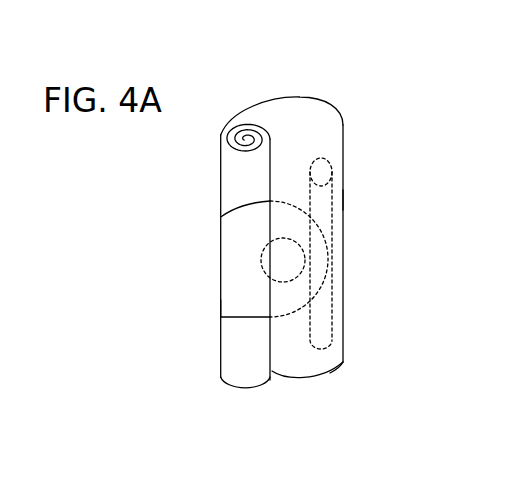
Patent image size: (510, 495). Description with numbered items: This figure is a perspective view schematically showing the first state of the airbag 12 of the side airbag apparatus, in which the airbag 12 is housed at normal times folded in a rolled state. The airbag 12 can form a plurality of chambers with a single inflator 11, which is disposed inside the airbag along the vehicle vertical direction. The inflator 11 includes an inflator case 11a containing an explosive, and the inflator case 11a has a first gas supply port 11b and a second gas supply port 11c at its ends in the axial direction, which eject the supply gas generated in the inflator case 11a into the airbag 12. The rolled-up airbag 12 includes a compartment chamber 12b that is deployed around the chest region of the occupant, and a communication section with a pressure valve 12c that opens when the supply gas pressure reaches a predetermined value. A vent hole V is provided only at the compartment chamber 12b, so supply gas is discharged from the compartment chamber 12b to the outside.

The airbag 12 is at (289, 97).
The inflator 11 is at (321, 153).
The inflator case 11a is at (343, 199).
The first gas supply port 11b is at (331, 157).
The second gas supply port 11c is at (343, 347).
The vent hole V is at (260, 258).
The compartment chamber 12b is at (242, 284).
The pressure valve 12c is at (287, 265).